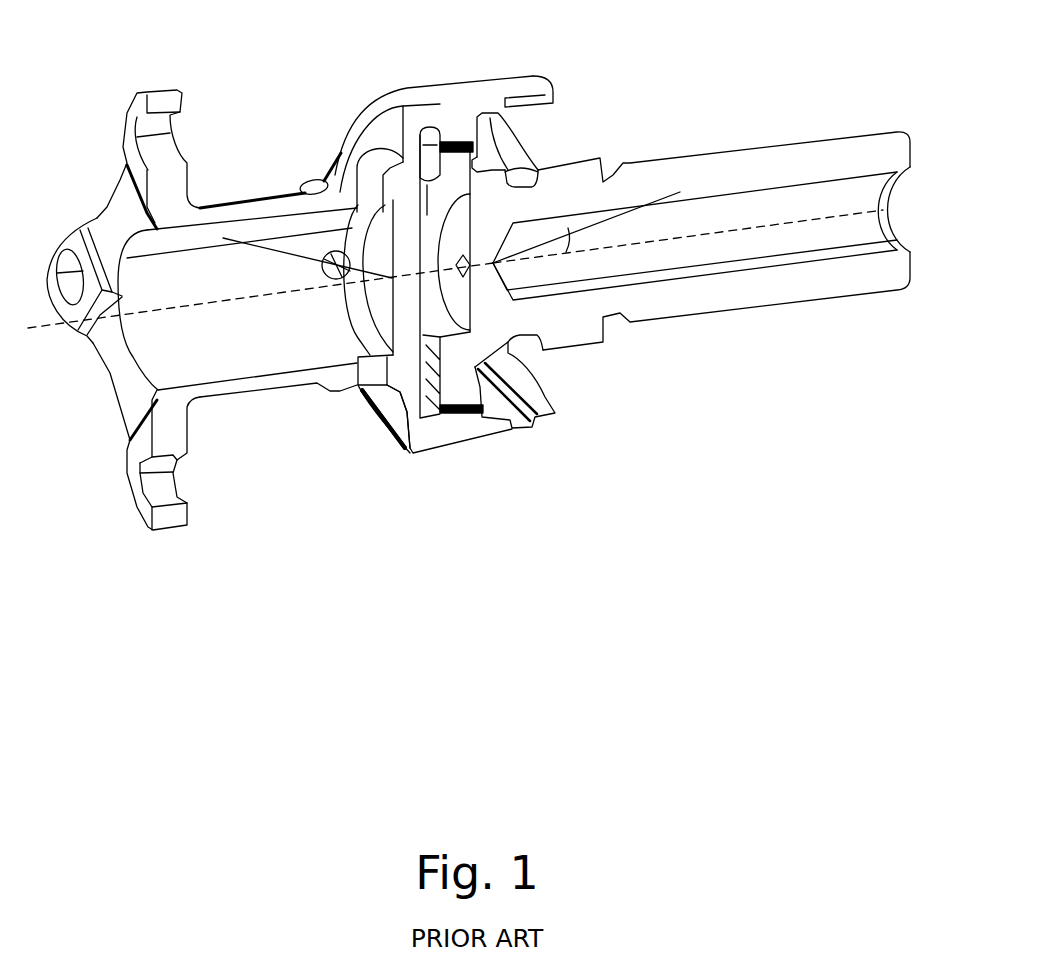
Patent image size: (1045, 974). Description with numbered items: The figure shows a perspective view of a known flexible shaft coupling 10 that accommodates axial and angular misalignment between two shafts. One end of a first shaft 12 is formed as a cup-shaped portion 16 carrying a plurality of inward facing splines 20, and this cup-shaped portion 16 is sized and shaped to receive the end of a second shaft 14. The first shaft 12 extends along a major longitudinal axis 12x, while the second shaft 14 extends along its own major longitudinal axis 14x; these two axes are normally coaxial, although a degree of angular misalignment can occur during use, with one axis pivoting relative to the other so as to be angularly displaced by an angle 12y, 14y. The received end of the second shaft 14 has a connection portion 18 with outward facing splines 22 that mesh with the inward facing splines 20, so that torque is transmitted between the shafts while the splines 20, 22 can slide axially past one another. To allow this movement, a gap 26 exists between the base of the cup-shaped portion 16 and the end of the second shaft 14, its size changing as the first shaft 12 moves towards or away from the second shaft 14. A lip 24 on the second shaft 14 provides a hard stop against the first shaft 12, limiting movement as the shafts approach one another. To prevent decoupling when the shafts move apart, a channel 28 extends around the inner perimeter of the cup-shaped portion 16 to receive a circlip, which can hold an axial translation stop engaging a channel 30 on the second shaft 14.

The shaft coupling 10 is at (700, 55).
The first shaft 12 is at (245, 214).
The major longitudinal axis of the first shaft 12x is at (150, 312).
The angle of angular displacement 12y is at (307, 289).
The second shaft 14 is at (760, 184).
The major longitudinal axis of the second shaft 14x is at (917, 207).
The angle of angular displacement 14y is at (566, 240).
The cup-shaped portion 16 is at (477, 84).
The connection portion 18 is at (467, 181).
The inward facing splines 20 is at (470, 137).
The outward facing splines 22 is at (418, 141).
The lip 24 is at (422, 365).
The gap 26 is at (428, 340).
The channel 28 is at (548, 94).
The channel 30 is at (508, 340).